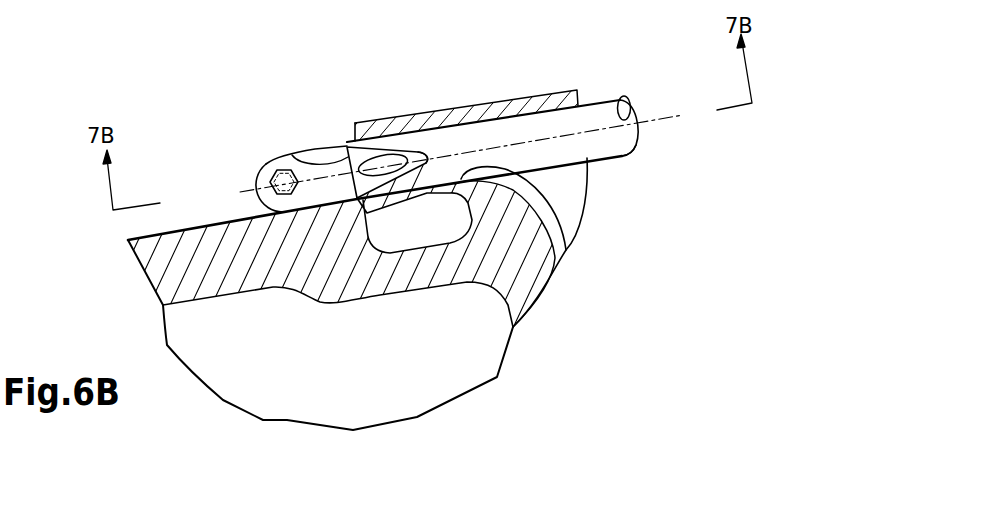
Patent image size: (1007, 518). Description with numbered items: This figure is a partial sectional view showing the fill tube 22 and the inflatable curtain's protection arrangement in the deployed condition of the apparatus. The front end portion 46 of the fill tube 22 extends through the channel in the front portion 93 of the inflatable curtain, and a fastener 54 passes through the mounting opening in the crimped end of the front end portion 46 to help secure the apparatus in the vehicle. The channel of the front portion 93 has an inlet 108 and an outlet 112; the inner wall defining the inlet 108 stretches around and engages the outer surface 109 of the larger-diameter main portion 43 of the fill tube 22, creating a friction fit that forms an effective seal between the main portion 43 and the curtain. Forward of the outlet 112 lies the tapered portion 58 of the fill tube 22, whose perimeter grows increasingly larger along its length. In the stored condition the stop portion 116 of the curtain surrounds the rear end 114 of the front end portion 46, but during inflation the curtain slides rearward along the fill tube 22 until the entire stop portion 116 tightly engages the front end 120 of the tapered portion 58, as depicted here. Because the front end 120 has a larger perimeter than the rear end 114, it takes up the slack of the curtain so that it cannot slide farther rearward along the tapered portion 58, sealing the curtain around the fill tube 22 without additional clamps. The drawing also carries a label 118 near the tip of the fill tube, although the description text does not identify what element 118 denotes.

The fill tube 22 is at (605, 119).
The main portion 43 is at (590, 115).
The front end portion 46 is at (258, 190).
The fastener 54 is at (270, 182).
The tapered portion 58 is at (393, 178).
The front portion 93 is at (523, 103).
The inlet 108 is at (560, 210).
The outer surface 109 is at (630, 157).
The outlet 112 is at (348, 146).
The rear end 114 is at (292, 156).
The stop portion 116 is at (358, 124).
The cutting tip 118 is at (427, 152).
The front end 120 is at (363, 153).